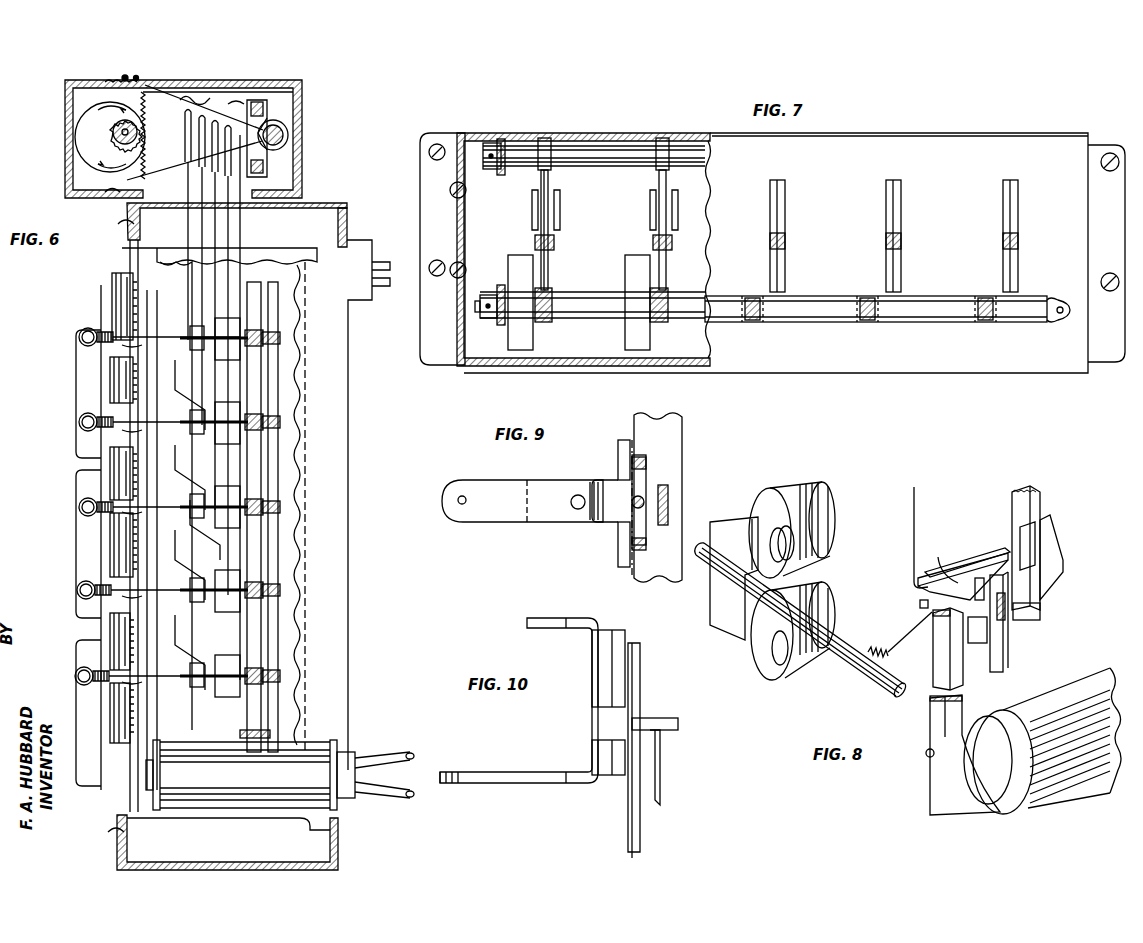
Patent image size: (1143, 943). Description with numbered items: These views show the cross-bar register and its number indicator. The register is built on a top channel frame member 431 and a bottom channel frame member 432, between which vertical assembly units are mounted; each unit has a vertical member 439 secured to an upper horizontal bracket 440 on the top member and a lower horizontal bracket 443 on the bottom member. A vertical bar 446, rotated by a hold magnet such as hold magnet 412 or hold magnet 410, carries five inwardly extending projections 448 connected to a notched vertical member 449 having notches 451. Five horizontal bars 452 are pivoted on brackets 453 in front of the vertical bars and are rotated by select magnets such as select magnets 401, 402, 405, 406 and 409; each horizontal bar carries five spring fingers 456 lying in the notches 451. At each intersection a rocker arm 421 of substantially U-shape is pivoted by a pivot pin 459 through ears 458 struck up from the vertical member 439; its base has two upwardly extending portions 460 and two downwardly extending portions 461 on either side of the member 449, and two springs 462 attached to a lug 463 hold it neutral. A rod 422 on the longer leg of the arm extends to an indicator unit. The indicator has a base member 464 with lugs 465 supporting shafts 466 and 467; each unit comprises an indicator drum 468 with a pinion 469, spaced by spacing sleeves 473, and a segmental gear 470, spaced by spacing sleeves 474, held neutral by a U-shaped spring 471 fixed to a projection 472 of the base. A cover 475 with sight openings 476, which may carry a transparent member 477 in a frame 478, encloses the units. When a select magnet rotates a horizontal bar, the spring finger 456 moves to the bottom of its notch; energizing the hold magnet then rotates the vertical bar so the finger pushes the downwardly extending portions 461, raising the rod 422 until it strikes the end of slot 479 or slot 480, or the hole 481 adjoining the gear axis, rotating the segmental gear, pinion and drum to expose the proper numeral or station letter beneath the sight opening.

In FIG. 6, the select magnet 401 is at (122, 279).
In FIG. 6, the select magnet 402 is at (121, 370).
In FIG. 6, the select magnet 405 is at (118, 468).
In FIG. 8, the select magnet 405 is at (812, 508).
In FIG. 6, the select magnet 406 is at (120, 537).
In FIG. 8, the select magnet 406 is at (812, 598).
In FIG. 6, the select magnet 409 is at (135, 640).
In FIG. 6, the hold magnet 410 is at (118, 700).
In FIG. 6, the hold magnet 412 is at (315, 750).
In FIG. 8, the hold magnet 412 is at (1070, 692).
In FIG. 6, the rocker arm 421 is at (205, 532).
In FIG. 9, the rocker arm 421 is at (495, 512).
In FIG. 10, the rocker arm 421 is at (498, 778).
In FIG. 8, the rocker arm 421 is at (925, 592).
In FIG. 6, the rod 422 is at (213, 227).
In FIG. 8, the rod 422 is at (916, 500).
In FIG. 6, the top channel frame member 431 is at (317, 205).
In FIG. 6, the bottom channel frame member 432 is at (338, 848).
In FIG. 6, the vertical member 439 is at (262, 552).
In FIG. 8, the vertical member 439 is at (1032, 505).
In FIG. 6, the upper horizontal bracket 440 is at (263, 273).
In FIG. 6, the lower horizontal bracket 443 is at (270, 732).
In FIG. 6, the vertical bar 446 is at (157, 578).
In FIG. 8, the vertical bar 446 is at (932, 728).
In FIG. 6, the projections 448 is at (112, 628).
In FIG. 9, the projections 448 is at (668, 492).
In FIG. 10, the projections 448 is at (661, 765).
In FIG. 8, the projections 448 is at (950, 640).
In FIG. 6, the vertical member 449 is at (255, 575).
In FIG. 9, the vertical member 449 is at (672, 432).
In FIG. 10, the vertical member 449 is at (660, 722).
In FIG. 8, the vertical member 449 is at (1005, 665).
In FIG. 9, the notch 451 is at (650, 475).
In FIG. 8, the notch 451 is at (1006, 628).
In FIG. 6, the horizontal bar 452 is at (79, 338).
In FIG. 8, the horizontal bar 452 is at (838, 655).
In FIG. 6, the bracket 453 is at (82, 565).
In FIG. 6, the spring finger 456 is at (122, 346).
In FIG. 9, the spring finger 456 is at (634, 506).
In FIG. 10, the spring finger 456 is at (642, 674).
In FIG. 8, the spring finger 456 is at (915, 650).
In FIG. 6, the ears 458 is at (248, 482).
In FIG. 8, the ears 458 is at (1022, 548).
In FIG. 8, the pivot pin 459 is at (1048, 585).
In FIG. 9, the upwardly extending portions 460 is at (618, 456).
In FIG. 10, the upwardly extending portions 460 is at (600, 752).
In FIG. 8, the upwardly extending portions 460 is at (978, 578).
In FIG. 9, the downwardly extending portions 461 is at (620, 556).
In FIG. 8, the downwardly extending portions 461 is at (1030, 612).
In FIG. 8, the springs 462 is at (958, 578).
In FIG. 8, the lug 463 is at (998, 548).
In FIG. 6, the base member 464 is at (103, 198).
In FIG. 7, the base member 464 is at (470, 211).
In FIG. 6, the lugs 465 is at (140, 188).
In FIG. 7, the lugs 465 is at (502, 140).
In FIG. 6, the shaft 466 is at (112, 133).
In FIG. 7, the shaft 466 is at (478, 304).
In FIG. 6, the shaft 467 is at (288, 136).
In FIG. 7, the shaft 467 is at (483, 150).
In FIG. 6, the indicator drum 468 is at (78, 124).
In FIG. 7, the indicator drum 468 is at (533, 345).
In FIG. 6, the pinion 469 is at (120, 136).
In FIG. 7, the pinion 469 is at (545, 318).
In FIG. 6, the segmental gear 470 is at (204, 116).
In FIG. 7, the segmental gear 470 is at (548, 262).
In FIG. 6, the U-shaped spring 471 is at (233, 96).
In FIG. 7, the U-shaped spring 471 is at (775, 195).
In FIG. 6, the vertically extending projection 472 is at (267, 177).
In FIG. 7, the vertically extending projection 472 is at (700, 178).
In FIG. 6, the spacing sleeves 473 is at (125, 176).
In FIG. 7, the spacing sleeves 473 is at (610, 297).
In FIG. 6, the spacing sleeves 474 is at (290, 118).
In FIG. 7, the spacing sleeves 474 is at (535, 146).
In FIG. 6, the cover 475 is at (300, 90).
In FIG. 7, the cover 475 is at (1003, 142).
In FIG. 6, the sight openings 476 is at (105, 82).
In FIG. 7, the sight openings 476 is at (754, 322).
In FIG. 6, the transparent member 477 is at (140, 78).
In FIG. 7, the transparent member 477 is at (803, 296).
In FIG. 7, the frame 478 is at (1032, 298).
In FIG. 6, the slot 479 is at (232, 108).
In FIG. 6, the slot 480 is at (232, 122).
In FIG. 6, the hole 481 is at (293, 153).